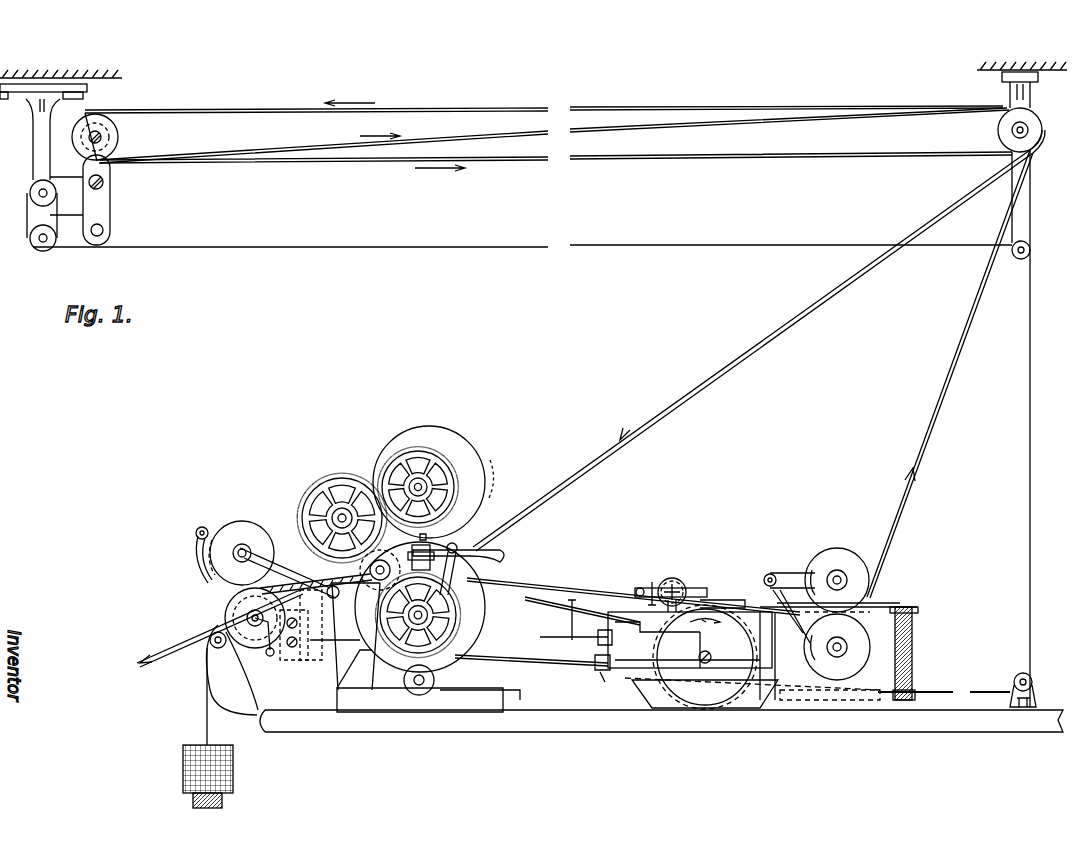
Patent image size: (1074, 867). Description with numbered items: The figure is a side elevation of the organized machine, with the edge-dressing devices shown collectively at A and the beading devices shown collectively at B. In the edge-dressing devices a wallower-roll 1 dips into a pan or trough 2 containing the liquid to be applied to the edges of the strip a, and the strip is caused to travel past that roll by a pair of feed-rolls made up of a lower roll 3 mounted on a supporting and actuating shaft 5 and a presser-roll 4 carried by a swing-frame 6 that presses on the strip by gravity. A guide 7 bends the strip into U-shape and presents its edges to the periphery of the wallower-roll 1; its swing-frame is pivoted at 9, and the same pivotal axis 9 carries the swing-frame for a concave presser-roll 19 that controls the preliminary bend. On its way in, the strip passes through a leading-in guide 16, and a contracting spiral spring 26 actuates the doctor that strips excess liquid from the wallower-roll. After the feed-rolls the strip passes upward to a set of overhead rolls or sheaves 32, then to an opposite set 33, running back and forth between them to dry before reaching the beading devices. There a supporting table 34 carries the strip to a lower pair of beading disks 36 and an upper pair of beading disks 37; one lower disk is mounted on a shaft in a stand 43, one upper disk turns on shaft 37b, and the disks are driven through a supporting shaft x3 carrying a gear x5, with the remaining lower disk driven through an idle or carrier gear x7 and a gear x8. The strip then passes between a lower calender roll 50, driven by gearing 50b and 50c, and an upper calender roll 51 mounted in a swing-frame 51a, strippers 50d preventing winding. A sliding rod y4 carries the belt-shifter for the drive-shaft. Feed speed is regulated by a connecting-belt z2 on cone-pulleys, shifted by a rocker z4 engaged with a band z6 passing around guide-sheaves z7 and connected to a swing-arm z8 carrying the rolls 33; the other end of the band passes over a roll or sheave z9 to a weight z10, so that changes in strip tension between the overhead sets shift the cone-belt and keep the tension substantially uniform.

The wallower-roll 1 is at (735, 627).
The pan or trough 2 is at (650, 700).
The lower feed-roll 3 is at (858, 647).
The presser-roll 4 is at (837, 552).
The supporting and actuating shaft 5 is at (845, 657).
The swing-frame 6 is at (787, 575).
The guide 7 is at (722, 600).
The pivot 9 is at (640, 588).
The leading-in guide 16 is at (570, 630).
The presser-roll 19 is at (676, 578).
The contracting spiral spring 26 is at (612, 680).
The set of overhead rolls or sheaves 32 is at (997, 130).
The set of overhead rolls or sheaves 33 is at (118, 137).
The supporting table 34 is at (490, 552).
The lower beading disk 36 is at (405, 612).
The upper beading disk 37 is at (458, 420).
The shaft of upper beading disk 37b is at (425, 487).
The stand 43 is at (470, 680).
The lower calender roll 50 is at (210, 640).
The gearing 50b is at (225, 590).
The gearing 50c is at (292, 548).
The stripper 50d is at (197, 555).
The upper calender roll 51 is at (235, 530).
The swing-frame 51a is at (262, 520).
The strip a is at (618, 110).
The edge-dressing devices A is at (776, 490).
The beading devices B is at (330, 380).
The supporting shaft x3 is at (335, 505).
The gear x5 is at (328, 490).
The idle or carrier gear x7 is at (470, 520).
The gear x8 is at (475, 610).
The sliding rod y4 is at (300, 680).
The connecting-belt z2 is at (518, 605).
The rocker z4 is at (870, 607).
The band z6 is at (965, 685).
The guide-sheave z7 is at (35, 185).
The swing-arm z8 is at (110, 200).
The roll or sheave z9 is at (205, 652).
The weight z10 is at (183, 752).